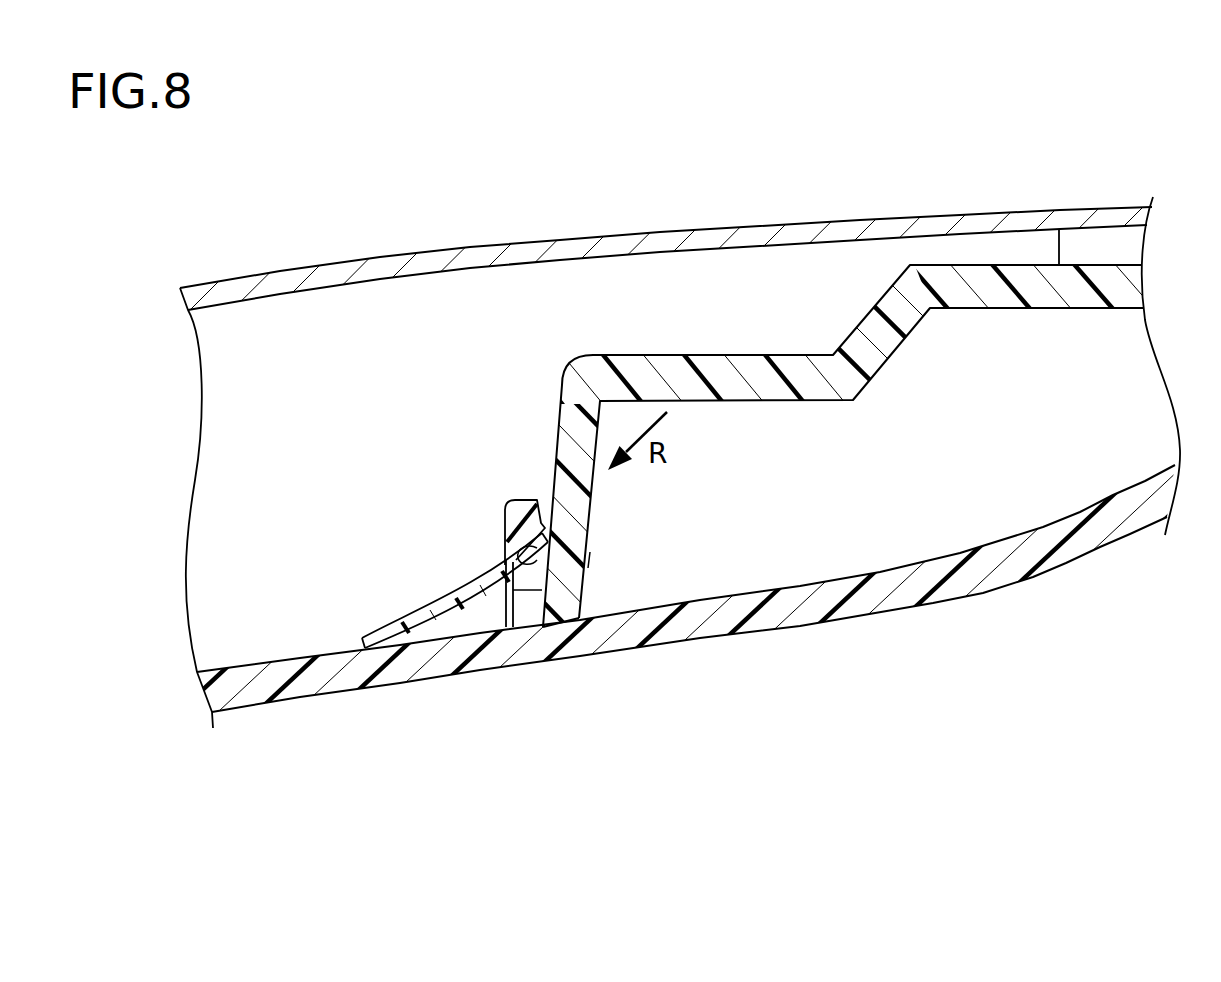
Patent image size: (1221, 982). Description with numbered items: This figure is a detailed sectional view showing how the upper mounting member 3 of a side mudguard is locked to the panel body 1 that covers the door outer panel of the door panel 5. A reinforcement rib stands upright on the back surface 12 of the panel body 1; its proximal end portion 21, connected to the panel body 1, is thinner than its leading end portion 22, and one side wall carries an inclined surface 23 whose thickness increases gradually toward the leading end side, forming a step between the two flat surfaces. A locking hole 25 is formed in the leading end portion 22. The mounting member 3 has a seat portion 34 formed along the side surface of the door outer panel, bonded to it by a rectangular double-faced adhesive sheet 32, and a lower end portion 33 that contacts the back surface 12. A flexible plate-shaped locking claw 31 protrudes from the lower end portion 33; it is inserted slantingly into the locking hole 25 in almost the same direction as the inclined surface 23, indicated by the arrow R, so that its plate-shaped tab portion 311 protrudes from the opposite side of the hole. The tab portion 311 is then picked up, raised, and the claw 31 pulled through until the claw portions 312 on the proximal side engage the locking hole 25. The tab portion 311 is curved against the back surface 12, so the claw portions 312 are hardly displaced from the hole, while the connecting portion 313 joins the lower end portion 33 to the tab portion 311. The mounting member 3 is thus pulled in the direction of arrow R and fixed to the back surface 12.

The panel body 1 is at (707, 660).
The back surface 12 is at (253, 663).
The door panel 5 is at (570, 238).
The mounting member 3 is at (745, 340).
The lower end portion 33 is at (558, 418).
The seat portion 34 is at (1007, 302).
The adhesive sheet 32 is at (1098, 247).
The proximal end portion 21 is at (507, 617).
The leading end portion 22 is at (508, 512).
The inclined surface 23 is at (548, 592).
The locking hole 25 is at (587, 557).
The locking claw 31 is at (417, 610).
The plate-shaped tab portion 311 is at (378, 633).
The claw portions 312 is at (477, 612).
The connecting portion 313 is at (495, 577).